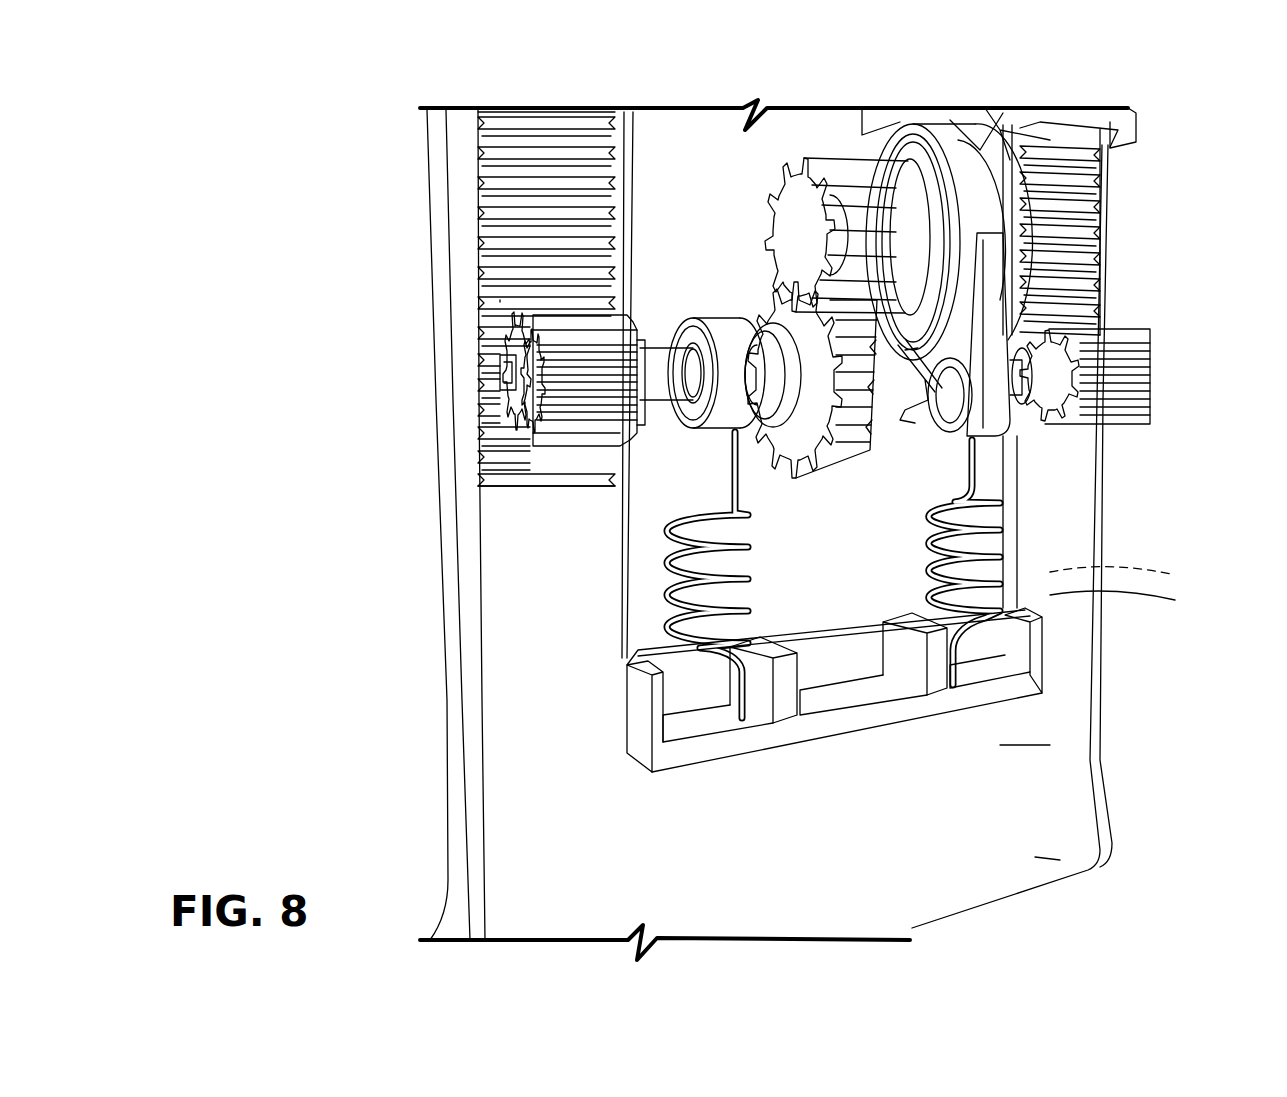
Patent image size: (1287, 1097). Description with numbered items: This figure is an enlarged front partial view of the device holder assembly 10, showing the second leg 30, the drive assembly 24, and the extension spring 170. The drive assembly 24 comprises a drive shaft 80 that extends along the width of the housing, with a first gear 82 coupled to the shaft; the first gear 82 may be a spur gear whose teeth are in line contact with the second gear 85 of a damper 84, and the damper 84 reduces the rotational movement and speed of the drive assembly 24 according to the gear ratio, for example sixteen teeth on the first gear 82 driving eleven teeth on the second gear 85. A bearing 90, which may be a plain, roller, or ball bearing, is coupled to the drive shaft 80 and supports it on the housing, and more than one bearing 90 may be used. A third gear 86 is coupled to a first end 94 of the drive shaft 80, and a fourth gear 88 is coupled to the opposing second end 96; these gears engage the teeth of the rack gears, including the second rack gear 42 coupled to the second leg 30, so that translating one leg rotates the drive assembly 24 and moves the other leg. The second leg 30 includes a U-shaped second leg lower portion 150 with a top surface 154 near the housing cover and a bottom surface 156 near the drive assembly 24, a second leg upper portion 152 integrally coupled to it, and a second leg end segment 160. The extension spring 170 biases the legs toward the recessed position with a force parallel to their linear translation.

The device holder assembly 10 is at (1165, 150).
The drive assembly 24 is at (697, 238).
The second leg 30 is at (1105, 503).
The second rack gear 42 is at (480, 246).
The drive shaft 80 is at (660, 383).
The first gear 82 is at (758, 300).
The damper 84 is at (968, 180).
The second gear 85 is at (857, 195).
The third gear 86 is at (480, 318).
The fourth gear 88 is at (1117, 348).
The bearing 90 is at (725, 397).
The first end 94 is at (512, 370).
The second end 96 is at (1135, 382).
The second leg lower portion 150 is at (1040, 585).
The second leg upper portion 152 is at (1010, 745).
The top surface 154 is at (1078, 595).
The bottom surface 156 is at (1143, 575).
The second leg end segment 160 is at (1035, 857).
The extension spring 170 is at (658, 590).